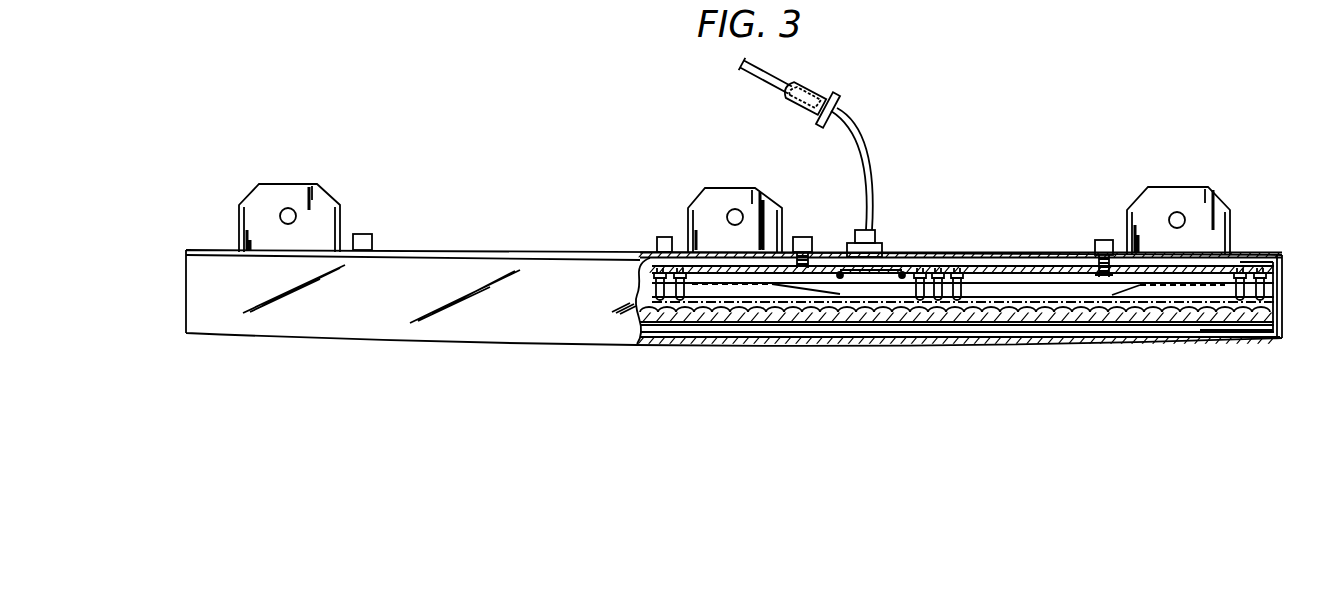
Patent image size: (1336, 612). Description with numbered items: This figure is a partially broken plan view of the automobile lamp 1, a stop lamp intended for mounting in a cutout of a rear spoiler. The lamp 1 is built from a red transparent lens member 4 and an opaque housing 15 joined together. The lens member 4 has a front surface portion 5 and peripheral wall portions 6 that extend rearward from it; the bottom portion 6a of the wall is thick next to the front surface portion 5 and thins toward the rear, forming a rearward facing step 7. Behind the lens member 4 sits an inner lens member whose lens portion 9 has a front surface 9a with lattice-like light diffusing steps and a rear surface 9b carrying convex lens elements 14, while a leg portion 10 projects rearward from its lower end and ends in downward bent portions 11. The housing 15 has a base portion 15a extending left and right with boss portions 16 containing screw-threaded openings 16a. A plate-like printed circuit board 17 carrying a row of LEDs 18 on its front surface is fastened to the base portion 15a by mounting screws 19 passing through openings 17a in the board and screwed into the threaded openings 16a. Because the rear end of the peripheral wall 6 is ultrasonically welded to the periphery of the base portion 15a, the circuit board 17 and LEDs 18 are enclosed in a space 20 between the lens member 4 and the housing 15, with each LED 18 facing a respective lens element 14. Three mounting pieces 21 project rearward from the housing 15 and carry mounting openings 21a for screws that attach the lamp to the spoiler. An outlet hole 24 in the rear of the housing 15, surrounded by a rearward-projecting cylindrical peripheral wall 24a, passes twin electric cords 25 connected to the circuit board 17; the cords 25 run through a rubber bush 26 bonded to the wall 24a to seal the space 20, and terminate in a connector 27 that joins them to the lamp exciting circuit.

The automobile lamp 1 is at (1062, 108).
The lens member 4 is at (543, 346).
The front surface portion 5 is at (673, 346).
The peripheral wall portion 6 is at (495, 336).
The bottom portion 6a is at (740, 334).
The rearward facing step 7 is at (1280, 286).
The lens portion 9 is at (877, 321).
The front surface 9a is at (850, 332).
The rear surface 9b is at (1055, 314).
The leg portion 10 is at (1018, 318).
The bent portion 11 is at (718, 282).
The lens element 14 is at (640, 303).
The housing 15 is at (487, 250).
The base portion 15a is at (950, 254).
The boss portion 16 is at (363, 234).
The screw-threaded opening 16a is at (800, 262).
The printed circuit board 17 is at (990, 268).
The opening 17a is at (790, 268).
The LED 18 is at (938, 300).
The mounting screw 19 is at (808, 270).
The space 20 is at (915, 333).
The mounting piece 21 is at (322, 192).
The mounting opening 21a is at (288, 208).
The outlet hole 24 is at (880, 243).
The cylindrical peripheral wall 24a is at (888, 256).
The twin electric cords 25 is at (845, 262).
The rubber bush 26 is at (875, 232).
The connector 27 is at (820, 88).